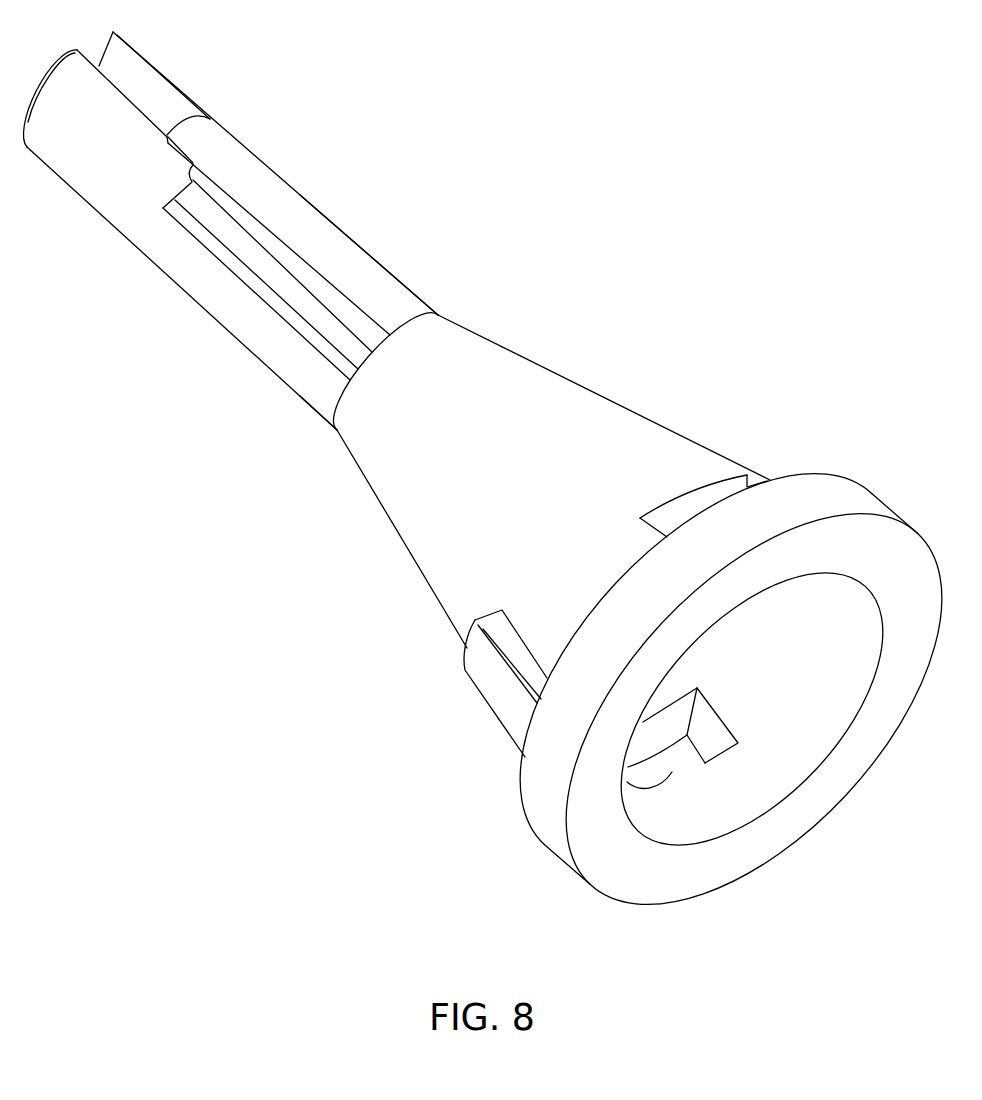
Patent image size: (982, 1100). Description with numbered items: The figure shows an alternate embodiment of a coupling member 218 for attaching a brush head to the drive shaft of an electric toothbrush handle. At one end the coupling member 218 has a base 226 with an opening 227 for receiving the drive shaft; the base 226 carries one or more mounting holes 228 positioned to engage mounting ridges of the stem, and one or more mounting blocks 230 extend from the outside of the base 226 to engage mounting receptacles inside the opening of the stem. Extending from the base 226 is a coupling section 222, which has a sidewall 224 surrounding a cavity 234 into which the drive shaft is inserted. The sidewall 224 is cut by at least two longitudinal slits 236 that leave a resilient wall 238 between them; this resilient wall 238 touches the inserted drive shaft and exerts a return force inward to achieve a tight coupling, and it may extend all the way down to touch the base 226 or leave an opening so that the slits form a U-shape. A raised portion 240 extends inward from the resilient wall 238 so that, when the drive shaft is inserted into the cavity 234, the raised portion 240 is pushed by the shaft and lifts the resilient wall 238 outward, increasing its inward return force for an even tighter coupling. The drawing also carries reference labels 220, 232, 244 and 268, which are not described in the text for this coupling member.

The coupling member 218 is at (595, 135).
The outer tube 220 is at (82, 175).
The coupling section 222 is at (230, 333).
The sidewall 224 is at (310, 387).
The base 226 is at (413, 540).
The opening 227 is at (790, 730).
The mounting hole 228 is at (671, 771).
The mounting block 230 is at (497, 703).
The upper strip 232 is at (155, 80).
The cavity 234 is at (238, 245).
The longitudinal slit 236 is at (233, 134).
The resilient wall 238 is at (358, 260).
The raised portion 240 is at (277, 240).
The flange 244 is at (537, 798).
The curved end 268 is at (187, 117).